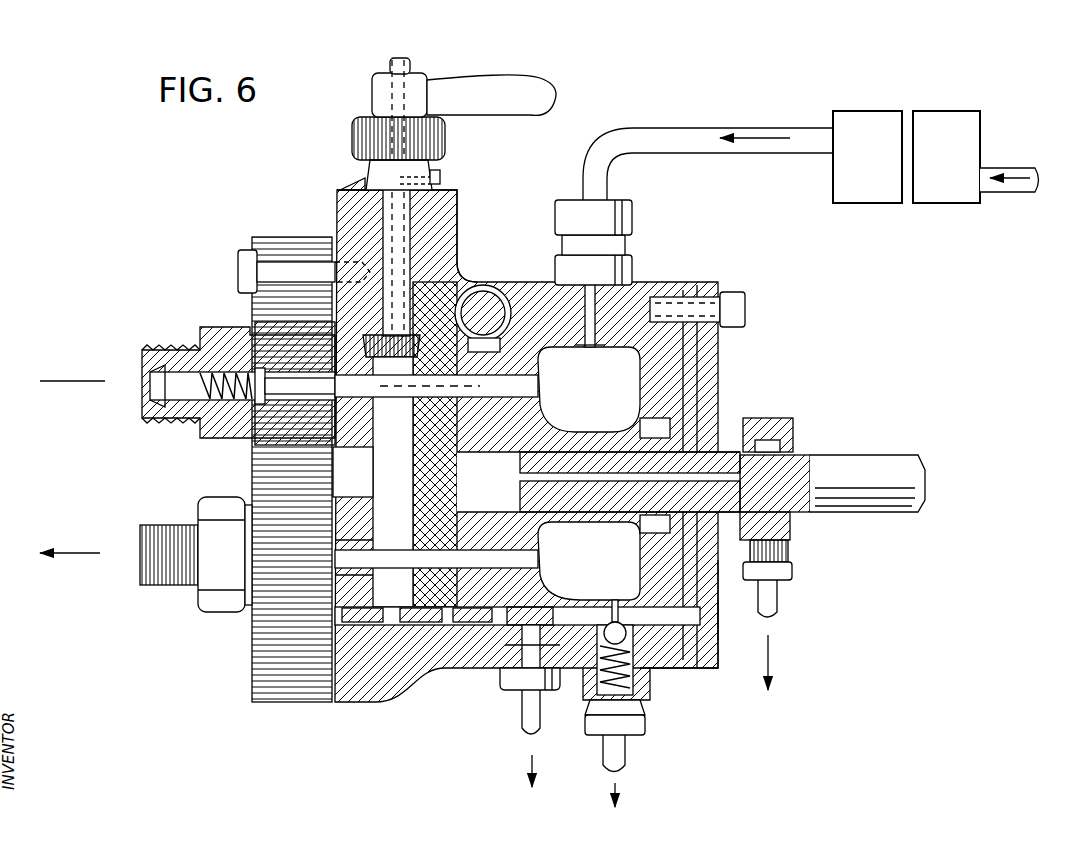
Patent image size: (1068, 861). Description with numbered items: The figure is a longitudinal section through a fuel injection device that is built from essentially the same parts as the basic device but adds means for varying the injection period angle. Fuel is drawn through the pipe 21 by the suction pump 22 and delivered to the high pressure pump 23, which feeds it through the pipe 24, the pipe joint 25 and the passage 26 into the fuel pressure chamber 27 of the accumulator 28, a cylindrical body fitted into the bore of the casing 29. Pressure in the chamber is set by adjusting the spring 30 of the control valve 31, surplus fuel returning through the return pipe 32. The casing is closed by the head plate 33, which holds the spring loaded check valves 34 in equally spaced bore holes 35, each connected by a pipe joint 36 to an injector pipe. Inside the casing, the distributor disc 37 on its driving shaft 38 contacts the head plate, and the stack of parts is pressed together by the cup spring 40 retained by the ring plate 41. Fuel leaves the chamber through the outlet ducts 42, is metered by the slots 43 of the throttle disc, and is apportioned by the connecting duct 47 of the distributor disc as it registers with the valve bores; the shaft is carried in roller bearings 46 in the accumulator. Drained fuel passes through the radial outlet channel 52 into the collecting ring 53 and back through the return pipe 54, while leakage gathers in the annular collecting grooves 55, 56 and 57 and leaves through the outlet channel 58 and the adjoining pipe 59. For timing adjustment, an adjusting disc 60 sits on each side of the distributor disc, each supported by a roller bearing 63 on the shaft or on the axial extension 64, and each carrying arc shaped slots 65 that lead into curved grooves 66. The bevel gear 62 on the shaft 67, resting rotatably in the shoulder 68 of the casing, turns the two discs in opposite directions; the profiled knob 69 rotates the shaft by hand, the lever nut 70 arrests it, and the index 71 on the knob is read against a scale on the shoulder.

The pipe 21 is at (1012, 187).
The suction pump 22 is at (937, 132).
The high pressure pump 23 is at (858, 133).
The pipe 24 is at (767, 142).
The pipe joint 25 is at (632, 275).
The passage 26 is at (593, 345).
The fuel pressure chamber 27 is at (556, 414).
The accumulator 28 is at (657, 400).
The casing 29 is at (335, 700).
The spring 30 is at (642, 687).
The control valve 31 is at (663, 673).
The return pipe 32 is at (630, 758).
The head plate 33 is at (275, 635).
The check valve 34 is at (307, 385).
The bore hole 35 is at (200, 437).
The pipe joint 36 is at (165, 405).
The distributor disc 37 is at (390, 450).
The driving shaft 38 is at (902, 513).
The cup spring 40 is at (717, 673).
The ring plate 41 is at (717, 635).
The outlet duct 42 is at (518, 388).
The slot 43 is at (436, 473).
The roller bearing 46 is at (662, 436).
The apportioning connecting duct 47 is at (383, 388).
The radial outlet channel 52 is at (788, 512).
The collecting ring 53 is at (775, 420).
The return pipe 54 is at (778, 598).
The collecting groove 55 is at (342, 622).
The collecting groove 56 is at (392, 618).
The collecting groove 57 is at (490, 620).
The outlet channel 58 is at (517, 625).
The pipe 59 is at (543, 728).
The adjusting disc 60 is at (353, 350).
The bevel gear 62 is at (390, 345).
The roller bearing 63 is at (450, 520).
The axial extension 64 is at (357, 482).
The arc shaped slot 65 is at (423, 387).
The curved groove 66 is at (337, 553).
The shaft 67 is at (400, 207).
The shoulder 68 is at (432, 222).
The profiled knob 69 is at (435, 140).
The lever nut 70 is at (535, 86).
The index 71 is at (363, 178).